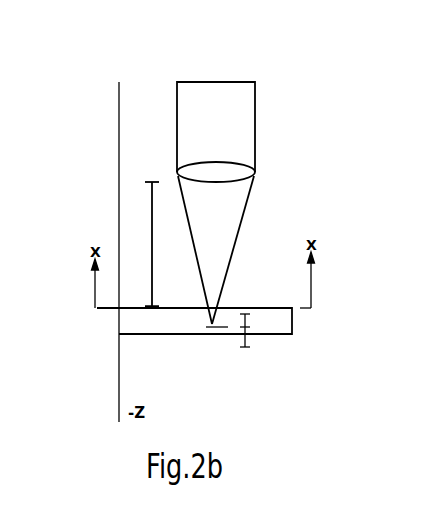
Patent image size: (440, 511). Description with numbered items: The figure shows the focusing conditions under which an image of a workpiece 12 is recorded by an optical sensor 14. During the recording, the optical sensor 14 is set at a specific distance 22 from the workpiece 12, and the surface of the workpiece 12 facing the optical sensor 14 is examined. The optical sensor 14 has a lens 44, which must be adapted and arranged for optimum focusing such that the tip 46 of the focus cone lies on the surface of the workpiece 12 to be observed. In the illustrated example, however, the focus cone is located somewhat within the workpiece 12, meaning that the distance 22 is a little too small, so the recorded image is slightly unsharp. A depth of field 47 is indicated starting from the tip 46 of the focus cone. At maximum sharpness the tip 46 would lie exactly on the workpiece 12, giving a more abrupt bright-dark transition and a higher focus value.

The workpiece 12 is at (133, 322).
The optical sensor 14 is at (207, 104).
The distance 22 is at (152, 222).
The lens 44 is at (200, 172).
The tip of focus cone 46 is at (212, 328).
The depth of field 47 is at (250, 328).